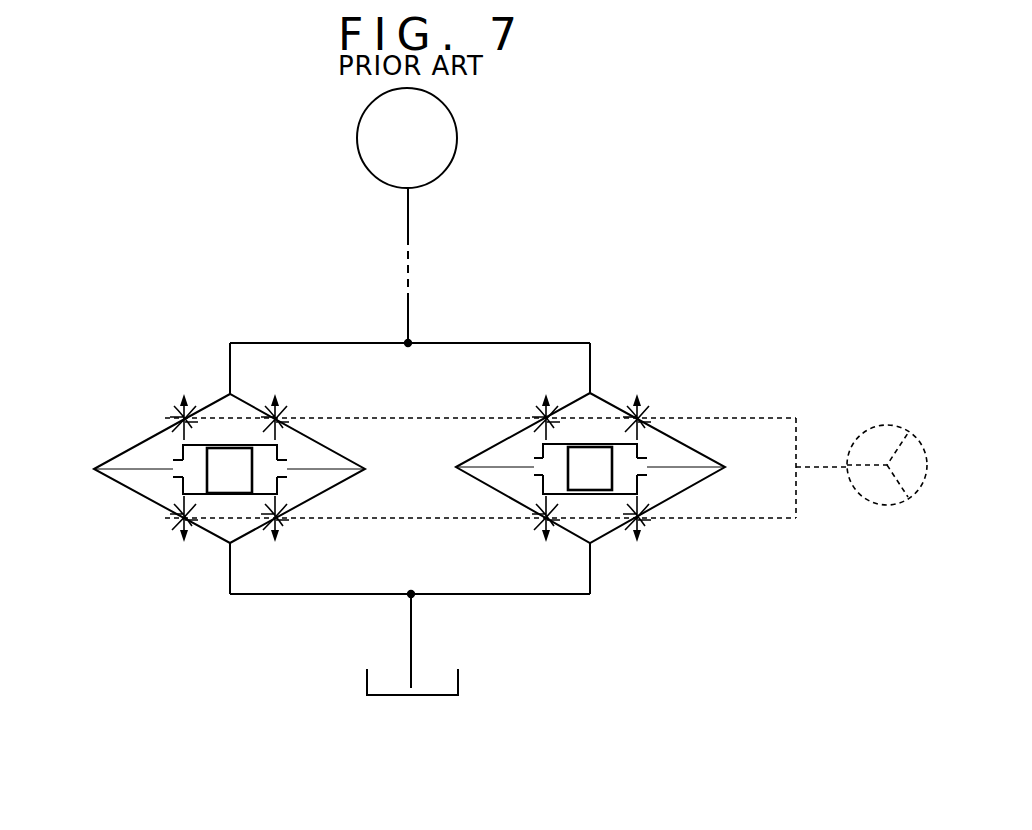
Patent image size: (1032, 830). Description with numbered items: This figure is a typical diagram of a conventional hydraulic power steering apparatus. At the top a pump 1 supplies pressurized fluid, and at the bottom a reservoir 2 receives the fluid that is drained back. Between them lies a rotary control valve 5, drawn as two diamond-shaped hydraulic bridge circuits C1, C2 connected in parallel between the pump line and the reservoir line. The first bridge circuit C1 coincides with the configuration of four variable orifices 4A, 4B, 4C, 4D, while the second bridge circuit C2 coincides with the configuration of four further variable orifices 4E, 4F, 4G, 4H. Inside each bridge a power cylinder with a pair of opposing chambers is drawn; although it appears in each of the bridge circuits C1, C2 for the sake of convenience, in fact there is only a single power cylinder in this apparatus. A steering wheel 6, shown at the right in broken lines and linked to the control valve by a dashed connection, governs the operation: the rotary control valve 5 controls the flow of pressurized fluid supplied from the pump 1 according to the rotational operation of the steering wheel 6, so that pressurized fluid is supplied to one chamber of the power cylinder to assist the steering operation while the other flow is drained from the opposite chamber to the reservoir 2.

The pump 1 is at (448, 142).
The reservoir 2 is at (430, 695).
The variable orifice 4A is at (165, 412).
The variable orifice 4B is at (295, 412).
The variable orifice 4C is at (165, 528).
The variable orifice 4D is at (296, 528).
The variable orifice 4E is at (527, 412).
The variable orifice 4F is at (655, 412).
The variable orifice 4G is at (527, 528).
The variable orifice 4H is at (657, 528).
The rotary control valve 5 is at (612, 324).
The steering wheel 6 is at (897, 503).
The hydraulic bridge circuit C1 is at (108, 433).
The hydraulic bridge circuit C2 is at (701, 424).